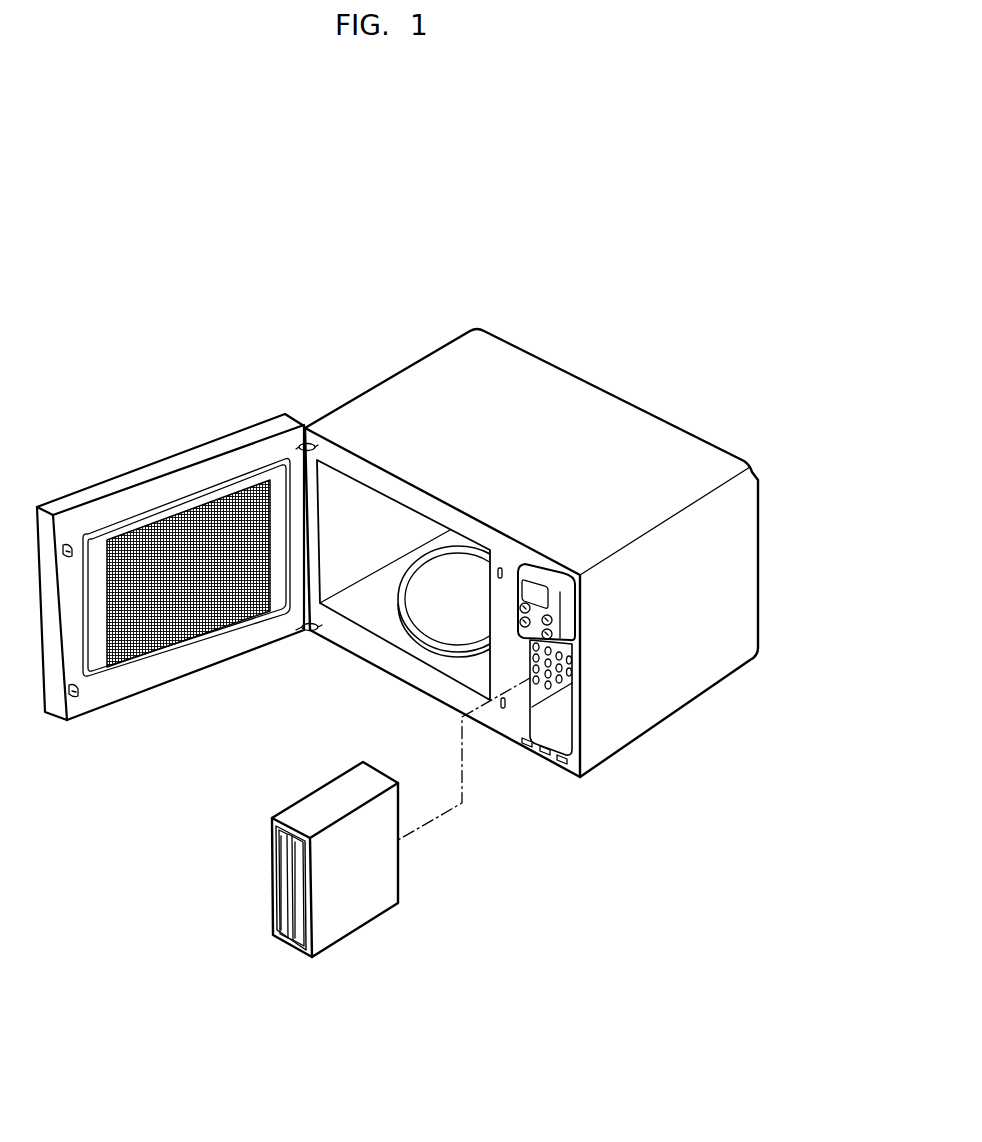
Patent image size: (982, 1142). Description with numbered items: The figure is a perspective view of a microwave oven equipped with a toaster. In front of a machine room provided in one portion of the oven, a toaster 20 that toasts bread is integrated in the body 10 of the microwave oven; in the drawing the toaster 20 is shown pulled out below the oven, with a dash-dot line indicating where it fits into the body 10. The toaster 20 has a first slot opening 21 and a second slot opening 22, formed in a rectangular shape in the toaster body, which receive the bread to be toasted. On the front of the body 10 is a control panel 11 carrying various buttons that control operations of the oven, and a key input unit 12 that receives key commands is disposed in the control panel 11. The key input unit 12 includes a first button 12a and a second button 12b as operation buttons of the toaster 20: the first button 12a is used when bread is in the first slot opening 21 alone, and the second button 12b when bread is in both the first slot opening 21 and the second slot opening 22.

The body 10 is at (628, 412).
The control panel 11 is at (664, 664).
The key input unit 12 is at (555, 618).
The first button 12a is at (553, 627).
The second button 12b is at (553, 641).
The toaster 20 is at (334, 859).
The first slot opening 21 is at (283, 884).
The second slot opening 22 is at (300, 904).